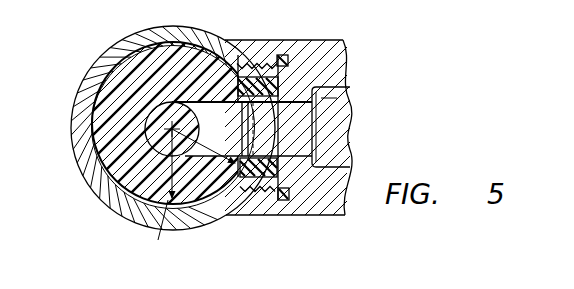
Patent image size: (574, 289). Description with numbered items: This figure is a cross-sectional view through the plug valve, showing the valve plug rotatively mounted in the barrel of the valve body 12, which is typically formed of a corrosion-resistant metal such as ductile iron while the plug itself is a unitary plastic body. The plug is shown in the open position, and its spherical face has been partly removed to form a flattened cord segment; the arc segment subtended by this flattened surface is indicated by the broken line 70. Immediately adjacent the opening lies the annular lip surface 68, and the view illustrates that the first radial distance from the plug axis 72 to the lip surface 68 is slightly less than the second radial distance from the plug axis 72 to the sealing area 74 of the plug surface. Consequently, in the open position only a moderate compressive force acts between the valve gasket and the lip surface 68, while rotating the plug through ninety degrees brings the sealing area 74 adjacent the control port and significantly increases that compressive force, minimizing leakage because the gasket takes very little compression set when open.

The valve body 12 is at (105, 206).
The plug axis 72 is at (153, 98).
The annular lip surface 68 is at (237, 101).
The broken line 70 is at (255, 125).
The sealing area 74 is at (158, 240).